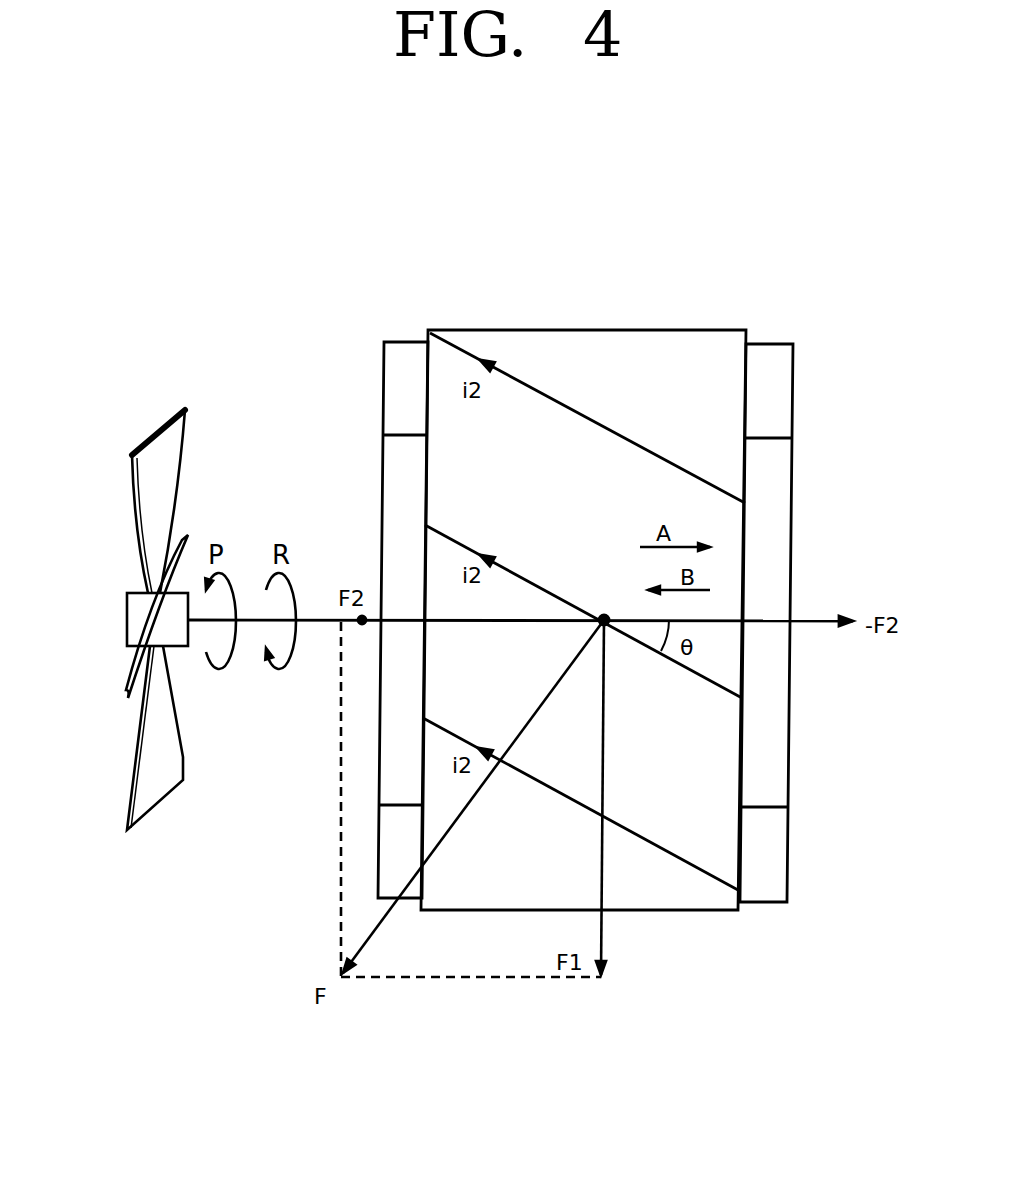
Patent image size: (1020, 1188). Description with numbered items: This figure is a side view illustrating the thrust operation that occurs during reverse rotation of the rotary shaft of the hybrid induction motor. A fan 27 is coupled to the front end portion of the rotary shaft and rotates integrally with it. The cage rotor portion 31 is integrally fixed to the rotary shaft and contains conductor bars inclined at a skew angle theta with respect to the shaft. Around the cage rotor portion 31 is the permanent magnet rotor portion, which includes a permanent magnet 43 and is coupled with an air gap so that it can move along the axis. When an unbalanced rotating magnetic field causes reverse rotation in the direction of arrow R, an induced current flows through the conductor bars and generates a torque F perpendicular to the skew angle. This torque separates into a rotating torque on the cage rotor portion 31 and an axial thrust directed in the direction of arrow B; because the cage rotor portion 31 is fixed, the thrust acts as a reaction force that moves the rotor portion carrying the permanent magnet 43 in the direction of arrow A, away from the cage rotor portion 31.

The fan 27 is at (146, 487).
The cage rotor portion 31 is at (383, 340).
The permanent magnet 43 is at (698, 330).